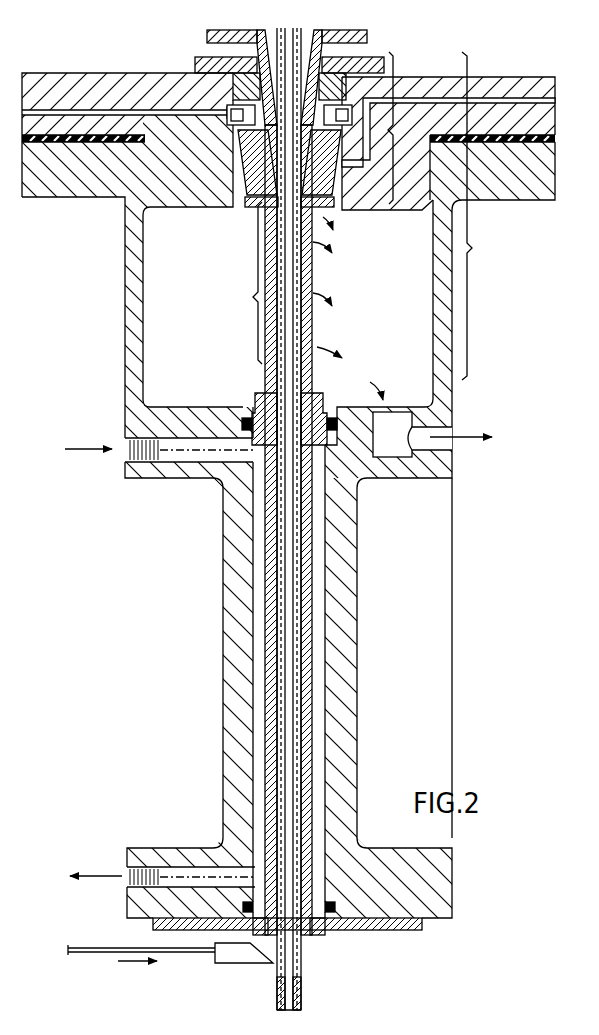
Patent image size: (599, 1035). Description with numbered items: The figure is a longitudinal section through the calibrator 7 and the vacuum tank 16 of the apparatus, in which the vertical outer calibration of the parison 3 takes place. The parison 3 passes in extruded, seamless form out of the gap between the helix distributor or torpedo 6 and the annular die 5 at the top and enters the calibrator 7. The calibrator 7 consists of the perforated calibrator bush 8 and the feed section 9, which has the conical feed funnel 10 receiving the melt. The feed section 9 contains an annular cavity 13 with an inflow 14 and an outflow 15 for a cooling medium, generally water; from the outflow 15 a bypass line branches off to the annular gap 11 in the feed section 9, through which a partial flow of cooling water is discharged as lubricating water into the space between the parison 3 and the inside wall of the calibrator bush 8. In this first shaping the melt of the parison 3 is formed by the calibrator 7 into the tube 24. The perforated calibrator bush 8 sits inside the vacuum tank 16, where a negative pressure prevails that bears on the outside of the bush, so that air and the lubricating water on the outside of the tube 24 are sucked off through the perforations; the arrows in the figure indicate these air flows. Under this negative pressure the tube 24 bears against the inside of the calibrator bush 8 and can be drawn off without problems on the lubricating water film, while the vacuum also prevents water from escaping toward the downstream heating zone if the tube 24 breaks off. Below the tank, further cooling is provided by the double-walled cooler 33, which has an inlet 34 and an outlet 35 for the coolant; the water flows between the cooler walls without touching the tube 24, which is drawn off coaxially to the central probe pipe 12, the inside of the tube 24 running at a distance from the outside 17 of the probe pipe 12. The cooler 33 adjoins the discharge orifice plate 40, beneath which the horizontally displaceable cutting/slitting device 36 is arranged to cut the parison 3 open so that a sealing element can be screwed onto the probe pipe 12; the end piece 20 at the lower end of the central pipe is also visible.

The parison 3 is at (316, 42).
The annular die 5 is at (229, 31).
The helix distributor or torpedo 6 is at (277, 30).
The calibrator 7 is at (400, 226).
The perforated calibrator bush 8 is at (283, 557).
The feed section 9 is at (448, 128).
The conical feed funnel 10 is at (326, 62).
The annular gap 11 is at (312, 148).
The probe pipe 12 is at (293, 620).
The annular cavity 13 is at (245, 133).
The inflow 14 is at (176, 112).
The outflow 15 is at (488, 102).
The vacuum tank 16 is at (441, 297).
The outside of probe pipe 17 is at (300, 578).
The tube end cap 20 is at (307, 990).
The tube 24 is at (315, 521).
The double-walled cooler 33 is at (270, 597).
The inlet 34 is at (162, 464).
The outlet 35 is at (143, 866).
The cutting/slitting device 36 is at (230, 958).
The discharge orifice plate 40 is at (312, 932).